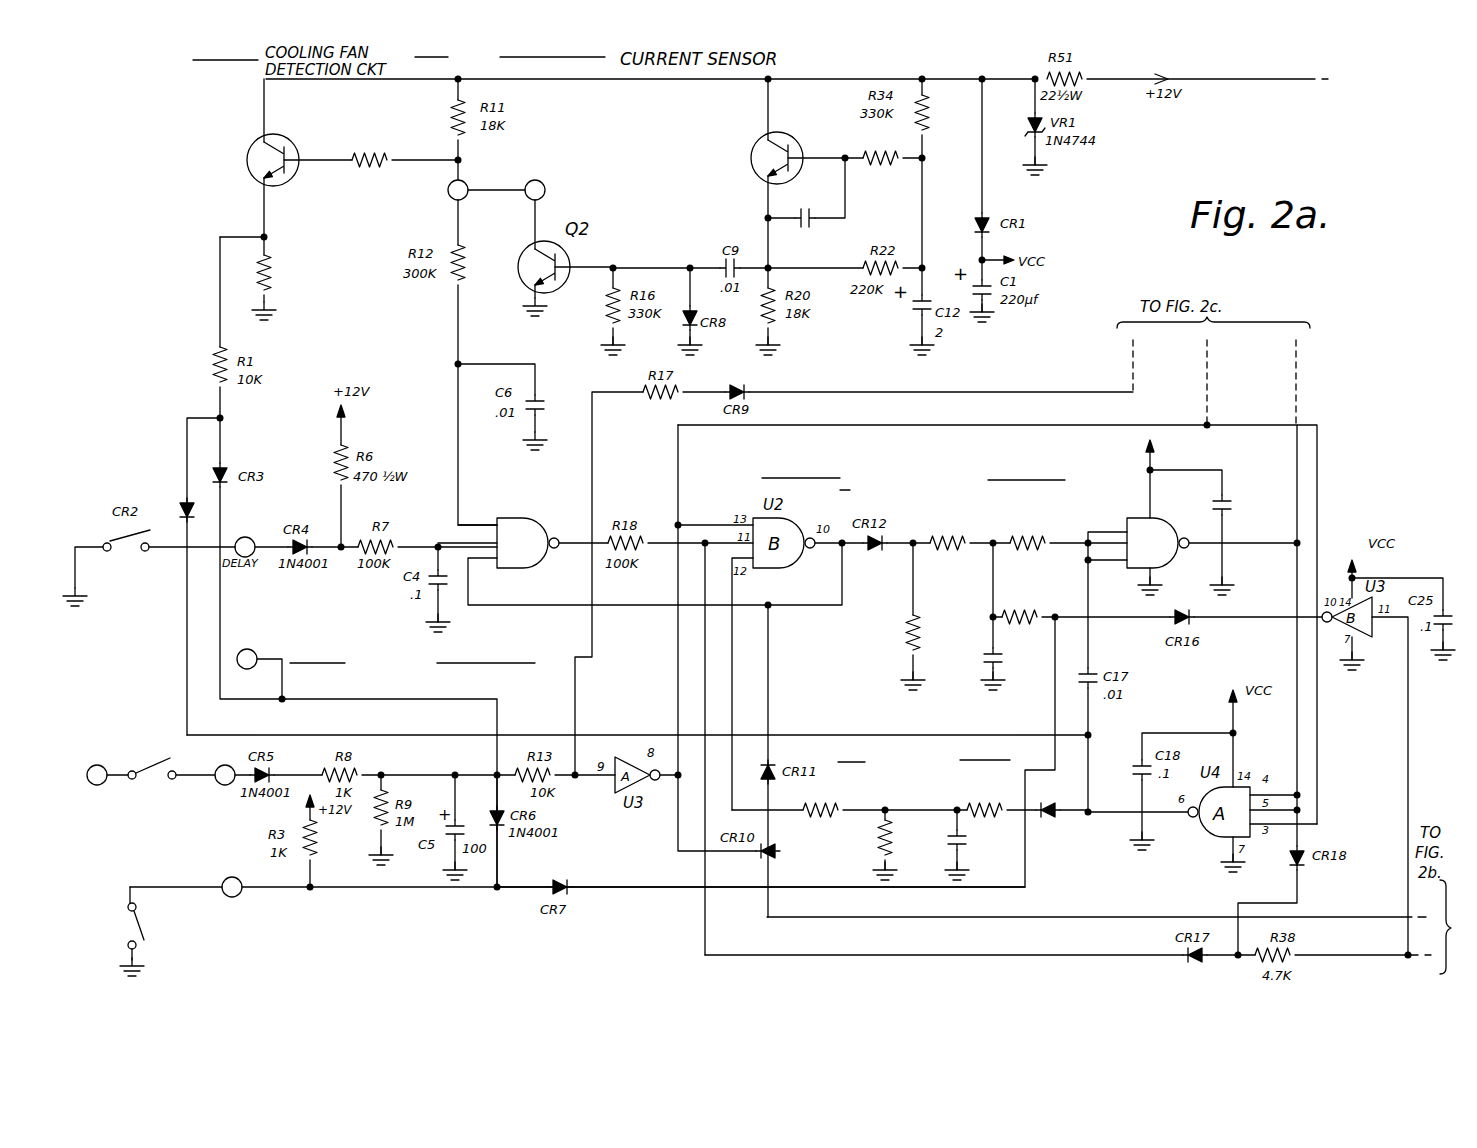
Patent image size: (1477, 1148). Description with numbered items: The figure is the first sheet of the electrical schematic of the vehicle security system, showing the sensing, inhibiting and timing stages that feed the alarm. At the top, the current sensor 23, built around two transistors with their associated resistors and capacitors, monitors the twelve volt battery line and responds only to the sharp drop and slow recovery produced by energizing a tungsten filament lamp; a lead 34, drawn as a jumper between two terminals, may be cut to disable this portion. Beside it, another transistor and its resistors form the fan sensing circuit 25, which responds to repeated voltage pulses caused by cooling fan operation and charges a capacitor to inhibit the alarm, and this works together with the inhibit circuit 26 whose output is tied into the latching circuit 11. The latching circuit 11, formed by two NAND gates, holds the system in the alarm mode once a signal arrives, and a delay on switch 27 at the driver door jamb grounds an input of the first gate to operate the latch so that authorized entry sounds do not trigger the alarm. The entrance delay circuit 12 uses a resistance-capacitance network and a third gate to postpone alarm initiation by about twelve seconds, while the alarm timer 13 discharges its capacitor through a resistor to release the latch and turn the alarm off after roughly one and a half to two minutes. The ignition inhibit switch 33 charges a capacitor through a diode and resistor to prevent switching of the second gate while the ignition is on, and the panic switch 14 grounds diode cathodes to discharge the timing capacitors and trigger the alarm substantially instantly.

The latching circuit 11 is at (636, 495).
The entrance delay circuit 12 is at (1028, 475).
The alarm timer 13 is at (910, 815).
The panic switch 14 is at (207, 928).
The current sensor 23 is at (770, 173).
The fan sensing circuit 25 is at (163, 278).
The inhibit circuit 26 is at (381, 685).
The delay on switch 27 is at (118, 553).
The ignition inhibit switch 33 is at (150, 768).
The lead 34 is at (522, 190).